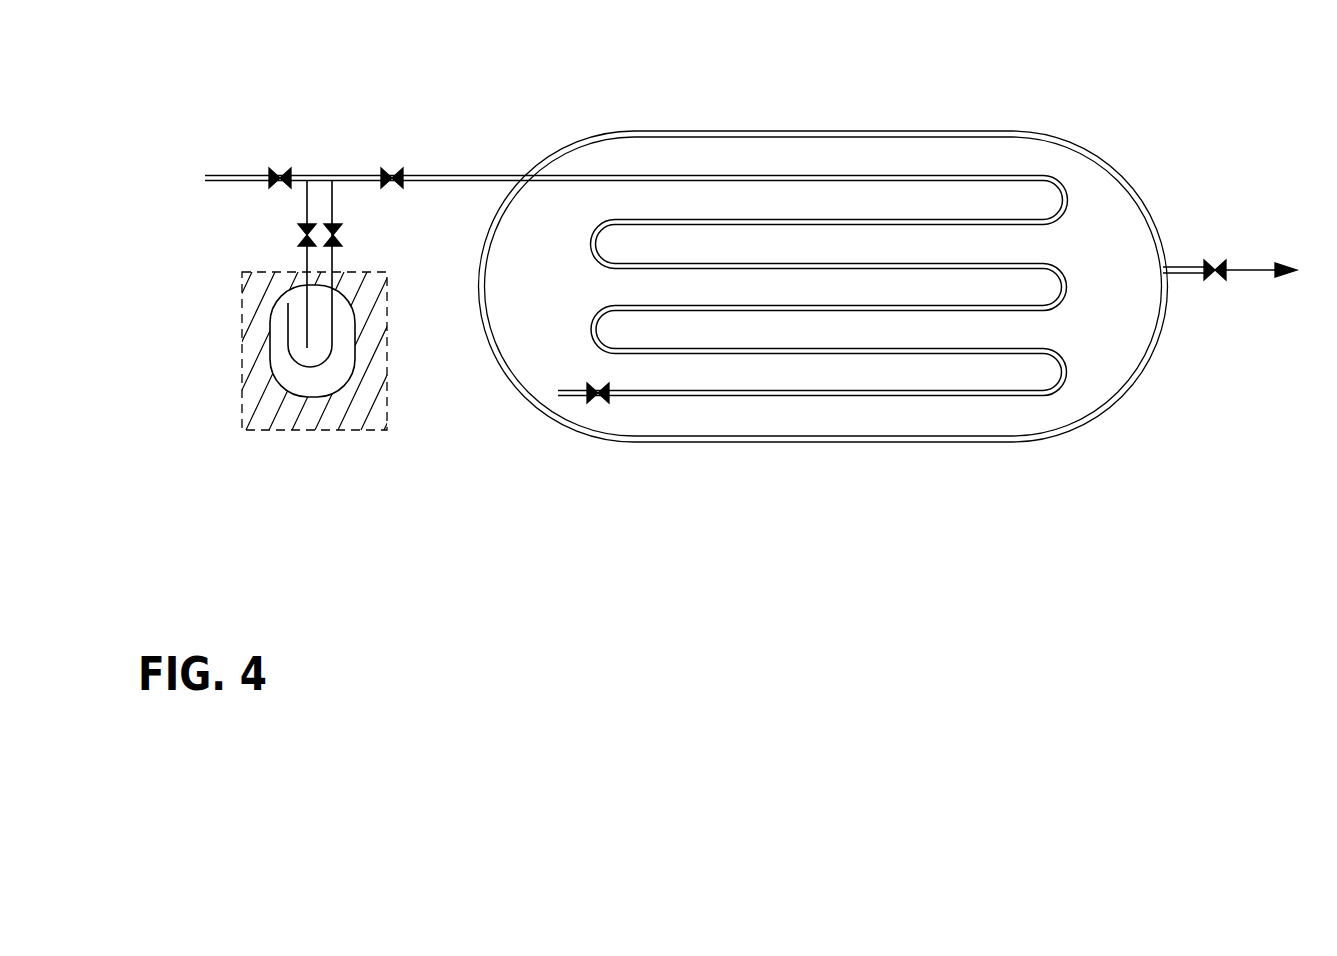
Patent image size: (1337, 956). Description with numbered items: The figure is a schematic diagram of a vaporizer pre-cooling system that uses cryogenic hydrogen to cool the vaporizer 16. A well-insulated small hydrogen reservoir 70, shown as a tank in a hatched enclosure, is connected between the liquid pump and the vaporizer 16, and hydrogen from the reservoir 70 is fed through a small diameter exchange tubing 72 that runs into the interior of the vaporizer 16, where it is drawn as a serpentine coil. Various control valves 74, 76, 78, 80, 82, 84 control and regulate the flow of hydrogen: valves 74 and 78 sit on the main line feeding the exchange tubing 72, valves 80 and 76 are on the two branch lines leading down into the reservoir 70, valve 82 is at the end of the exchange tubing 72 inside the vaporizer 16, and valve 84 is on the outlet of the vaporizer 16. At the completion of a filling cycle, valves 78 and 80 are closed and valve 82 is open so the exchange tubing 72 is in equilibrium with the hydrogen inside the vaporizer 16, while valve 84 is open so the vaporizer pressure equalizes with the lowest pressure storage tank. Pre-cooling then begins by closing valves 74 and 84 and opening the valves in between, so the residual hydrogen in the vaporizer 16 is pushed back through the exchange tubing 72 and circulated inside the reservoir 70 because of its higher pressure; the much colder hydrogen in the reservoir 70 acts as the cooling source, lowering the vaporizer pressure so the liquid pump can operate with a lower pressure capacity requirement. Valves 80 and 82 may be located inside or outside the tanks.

The vaporizer 16 is at (913, 131).
The hydrogen reservoir 70 is at (304, 391).
The exchange tubing 72 is at (757, 175).
The control valve 74 is at (285, 170).
The control valve 76 is at (340, 236).
The control valve 78 is at (392, 170).
The control valve 80 is at (300, 234).
The control valve 82 is at (597, 402).
The control valve 84 is at (1218, 262).